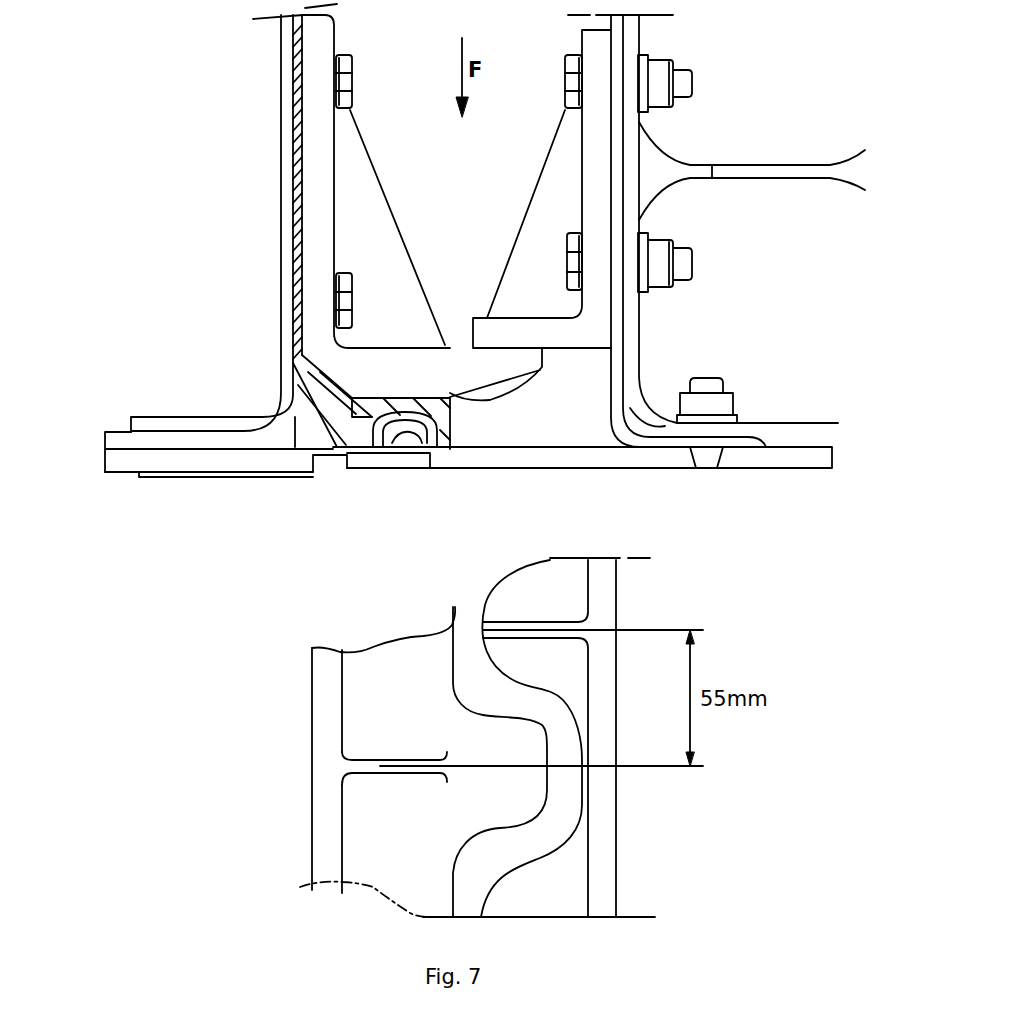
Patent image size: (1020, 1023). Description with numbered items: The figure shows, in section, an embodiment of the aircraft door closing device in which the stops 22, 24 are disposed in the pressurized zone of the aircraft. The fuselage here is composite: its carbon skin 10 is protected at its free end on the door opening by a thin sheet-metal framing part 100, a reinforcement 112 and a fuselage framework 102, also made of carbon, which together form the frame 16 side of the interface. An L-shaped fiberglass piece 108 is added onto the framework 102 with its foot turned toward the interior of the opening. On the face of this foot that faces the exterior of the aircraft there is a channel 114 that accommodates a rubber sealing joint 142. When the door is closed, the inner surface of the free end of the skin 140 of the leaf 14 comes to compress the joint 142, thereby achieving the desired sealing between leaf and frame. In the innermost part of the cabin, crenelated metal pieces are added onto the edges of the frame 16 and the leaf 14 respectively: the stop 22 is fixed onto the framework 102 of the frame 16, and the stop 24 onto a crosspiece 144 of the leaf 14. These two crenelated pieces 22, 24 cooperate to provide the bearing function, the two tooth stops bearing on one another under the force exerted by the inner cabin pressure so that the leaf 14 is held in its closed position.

The carbon skin 10 is at (125, 473).
The leaf 14 is at (665, 489).
The frame 16 is at (326, 490).
The tooth stop 22 is at (548, 314).
The tooth stop 24 is at (458, 346).
The sheet-metal framing part 100 is at (216, 480).
The fuselage framework 102 is at (288, 167).
The L-shaped fiberglass piece 108 is at (290, 112).
The reinforcement 112 is at (108, 445).
The channel 114 is at (384, 445).
The skin of leaf 140 is at (527, 460).
The rubber sealing joint 142 is at (430, 469).
The crosspiece 144 is at (617, 299).